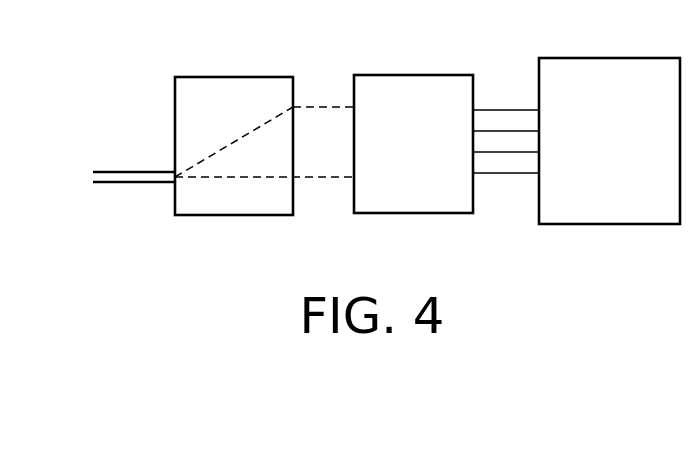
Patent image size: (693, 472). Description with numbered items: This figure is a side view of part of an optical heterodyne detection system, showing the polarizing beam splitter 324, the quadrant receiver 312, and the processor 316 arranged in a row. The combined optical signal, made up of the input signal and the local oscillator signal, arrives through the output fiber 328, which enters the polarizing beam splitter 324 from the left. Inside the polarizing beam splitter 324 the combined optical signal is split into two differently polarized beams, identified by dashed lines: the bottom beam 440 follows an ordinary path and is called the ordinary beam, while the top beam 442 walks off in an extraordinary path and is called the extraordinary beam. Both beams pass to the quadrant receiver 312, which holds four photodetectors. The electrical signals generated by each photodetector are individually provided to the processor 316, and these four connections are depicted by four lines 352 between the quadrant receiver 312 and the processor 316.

The polarizing beam splitter 324 is at (235, 77).
The output fiber 328 is at (121, 170).
The top beam 442 is at (324, 107).
The bottom beam 440 is at (334, 178).
The quadrant receiver 312 is at (415, 75).
The four lines 352 is at (502, 108).
The processor 316 is at (605, 58).